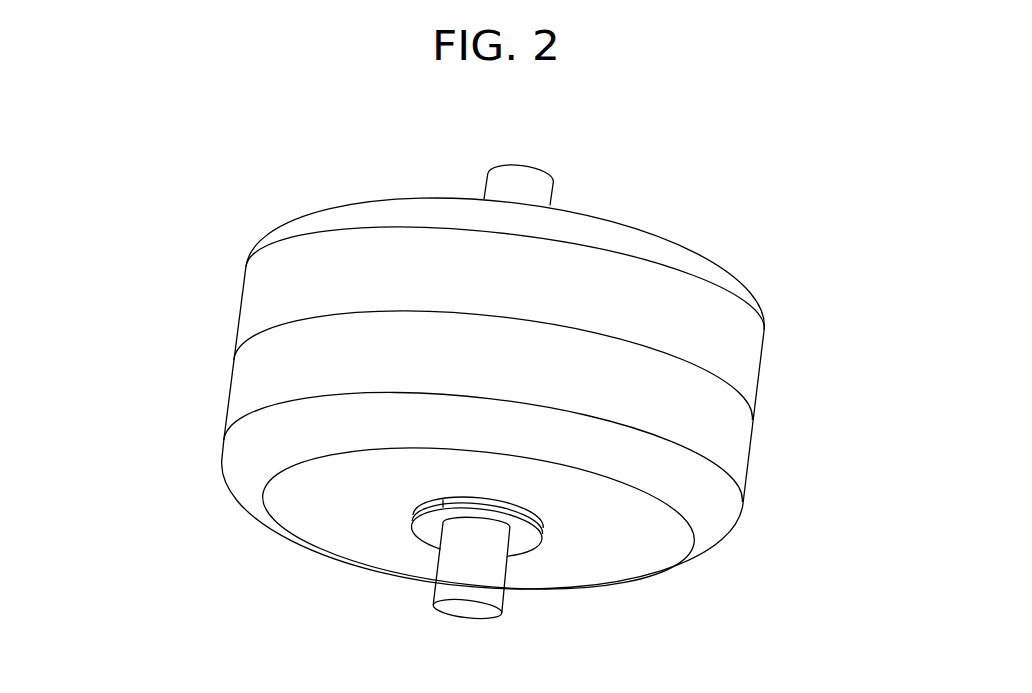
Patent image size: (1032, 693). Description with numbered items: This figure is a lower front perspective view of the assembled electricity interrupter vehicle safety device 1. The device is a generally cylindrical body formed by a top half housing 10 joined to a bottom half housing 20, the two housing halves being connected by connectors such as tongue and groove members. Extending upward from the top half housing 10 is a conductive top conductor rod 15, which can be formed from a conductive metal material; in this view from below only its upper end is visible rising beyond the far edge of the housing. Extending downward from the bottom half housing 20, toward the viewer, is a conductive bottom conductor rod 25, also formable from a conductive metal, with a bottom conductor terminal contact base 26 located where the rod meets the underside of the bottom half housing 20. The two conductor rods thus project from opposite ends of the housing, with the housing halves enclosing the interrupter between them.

The electricity interrupter vehicle safety device 1 is at (190, 178).
The top half housing 10 is at (741, 371).
The top conductor rod 15 is at (530, 187).
The bottom half housing 20 is at (733, 453).
The bottom conductor rod 25 is at (488, 592).
The bottom conductor terminal contact base 26 is at (437, 523).